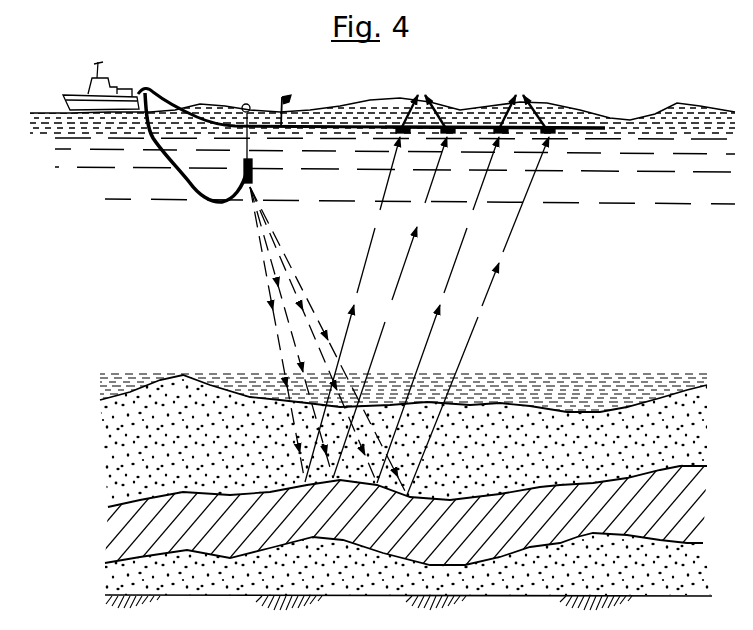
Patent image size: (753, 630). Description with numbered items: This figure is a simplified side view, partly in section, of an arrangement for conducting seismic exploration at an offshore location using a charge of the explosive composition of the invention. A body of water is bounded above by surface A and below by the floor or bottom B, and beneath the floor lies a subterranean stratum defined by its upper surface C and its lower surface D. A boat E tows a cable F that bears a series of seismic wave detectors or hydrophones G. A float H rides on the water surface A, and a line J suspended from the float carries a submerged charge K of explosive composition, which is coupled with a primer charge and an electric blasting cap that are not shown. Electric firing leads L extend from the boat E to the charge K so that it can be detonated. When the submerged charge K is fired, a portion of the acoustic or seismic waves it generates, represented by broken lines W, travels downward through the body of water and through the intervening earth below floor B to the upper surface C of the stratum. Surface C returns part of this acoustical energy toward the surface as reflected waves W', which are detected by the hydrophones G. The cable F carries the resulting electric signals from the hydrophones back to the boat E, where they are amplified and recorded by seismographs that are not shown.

The water surface A is at (375, 149).
The water floor or bottom B is at (398, 440).
The upper surface of subterranean stratum C is at (112, 506).
The lower surface of subterranean stratum D is at (404, 571).
The boat E is at (118, 88).
The cable F is at (287, 110).
The seismic wave detectors or hydrophones G is at (475, 107).
The float H is at (245, 100).
The line J is at (251, 146).
The submerged charge of explosive composition K is at (253, 168).
The electric firing leads L is at (181, 180).
The acoustic or seismic waves W is at (328, 341).
The reflected waves W' is at (427, 316).